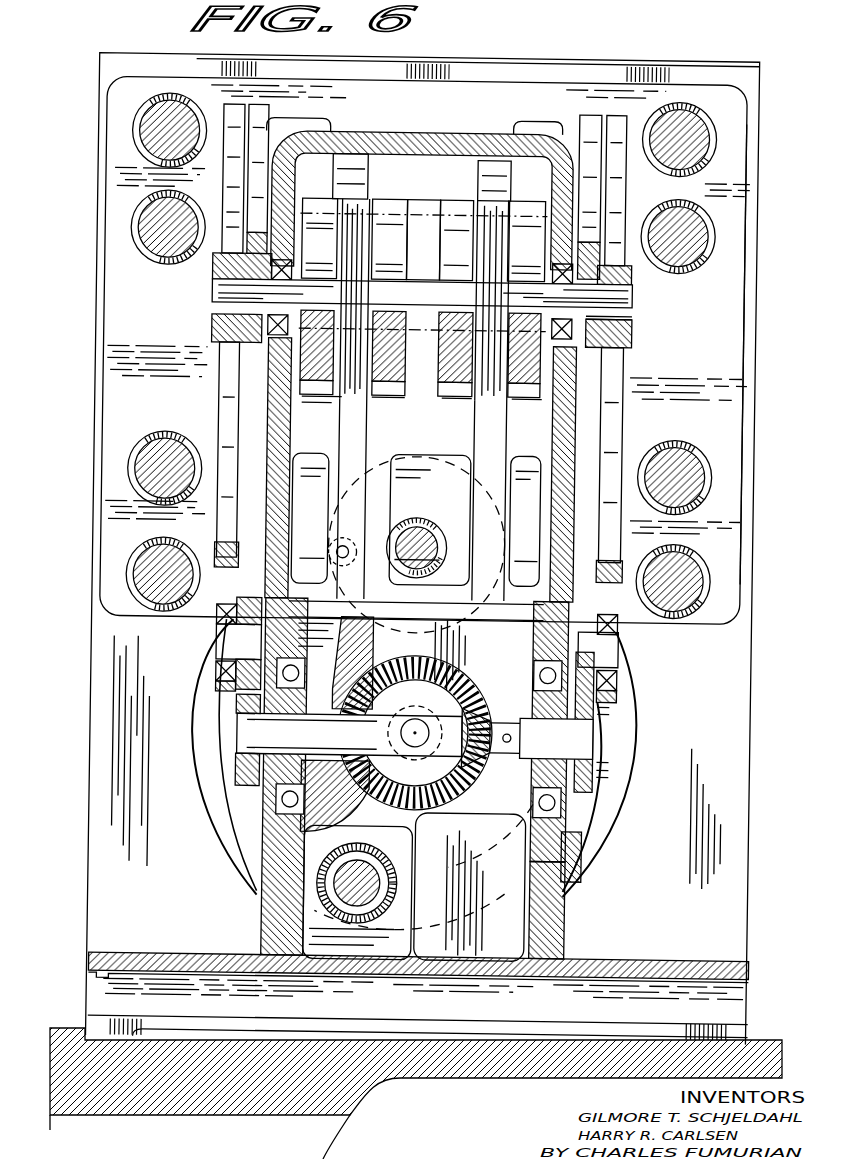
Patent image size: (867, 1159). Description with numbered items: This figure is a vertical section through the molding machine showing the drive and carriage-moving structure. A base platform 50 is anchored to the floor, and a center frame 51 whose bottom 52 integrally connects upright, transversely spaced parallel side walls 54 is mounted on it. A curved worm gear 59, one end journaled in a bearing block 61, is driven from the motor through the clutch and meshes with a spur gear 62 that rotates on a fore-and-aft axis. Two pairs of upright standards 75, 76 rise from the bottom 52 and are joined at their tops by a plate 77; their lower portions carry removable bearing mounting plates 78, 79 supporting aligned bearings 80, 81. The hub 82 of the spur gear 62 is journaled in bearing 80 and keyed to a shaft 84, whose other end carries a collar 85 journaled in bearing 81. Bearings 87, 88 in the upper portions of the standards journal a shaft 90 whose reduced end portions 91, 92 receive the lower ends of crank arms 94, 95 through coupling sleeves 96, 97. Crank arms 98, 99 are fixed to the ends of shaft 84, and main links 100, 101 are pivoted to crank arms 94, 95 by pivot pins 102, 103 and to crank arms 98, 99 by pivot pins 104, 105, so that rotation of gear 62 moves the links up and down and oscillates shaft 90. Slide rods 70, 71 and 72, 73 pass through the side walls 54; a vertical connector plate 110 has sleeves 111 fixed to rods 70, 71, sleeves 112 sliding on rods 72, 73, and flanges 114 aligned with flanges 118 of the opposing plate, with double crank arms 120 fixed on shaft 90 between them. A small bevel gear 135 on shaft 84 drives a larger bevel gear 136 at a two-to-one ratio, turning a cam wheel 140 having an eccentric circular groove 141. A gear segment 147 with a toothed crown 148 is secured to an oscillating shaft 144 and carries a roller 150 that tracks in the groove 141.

The base platform 50 is at (757, 1050).
The center frame 51 is at (590, 937).
The bottom 52 is at (645, 960).
The side walls 54 is at (744, 826).
The curved worm gear 59 is at (350, 941).
The bearing block 61 is at (400, 935).
The spur gear 62 is at (452, 645).
The slide rods 70 is at (155, 138).
The slide rods 71 is at (696, 234).
The slide rods 72 is at (695, 140).
The slide rods 73 is at (146, 233).
The standard 75 is at (276, 447).
The standard 76 is at (566, 416).
The plate 77 is at (340, 149).
The bearing mounting plate 78 is at (274, 860).
The bearing mounting plate 79 is at (584, 848).
The bearing 80 is at (278, 792).
The bearing 81 is at (569, 808).
The hub 82 is at (248, 762).
The shaft 84 is at (263, 737).
The collar 85 is at (608, 760).
The bearing 87 is at (213, 333).
The bearing 88 is at (628, 338).
The shaft 90 is at (587, 298).
The reduced end portion 91 is at (222, 299).
The reduced end portion 92 is at (628, 318).
The crank arm 94 is at (246, 197).
The crank arm 95 is at (601, 213).
The coupling sleeve 96 is at (212, 278).
The coupling sleeve 97 is at (632, 278).
The crank arm 98 is at (222, 675).
The crank arm 99 is at (592, 706).
The main link 100 is at (227, 432).
The main link 101 is at (614, 433).
The pivot pin 102 is at (195, 78).
The pivot pin 103 is at (625, 133).
The pivot pin 104 is at (226, 643).
The pivot pin 105 is at (612, 646).
The vertical connector plate 110 is at (728, 376).
The sleeves 111 is at (135, 114).
The sleeves 112 is at (132, 264).
The flanges 114 is at (374, 434).
The flanges 118 is at (711, 590).
The double crank arms 120 is at (451, 217).
The small bevel gear 135 is at (483, 765).
The larger bevel gear 136 is at (467, 680).
The cam wheel 140 is at (633, 733).
The eccentric circular groove 141 is at (470, 895).
The shaft 144 is at (420, 530).
The gear segment 147 is at (471, 600).
The toothed crown 148 is at (470, 480).
The roller 150 is at (325, 546).